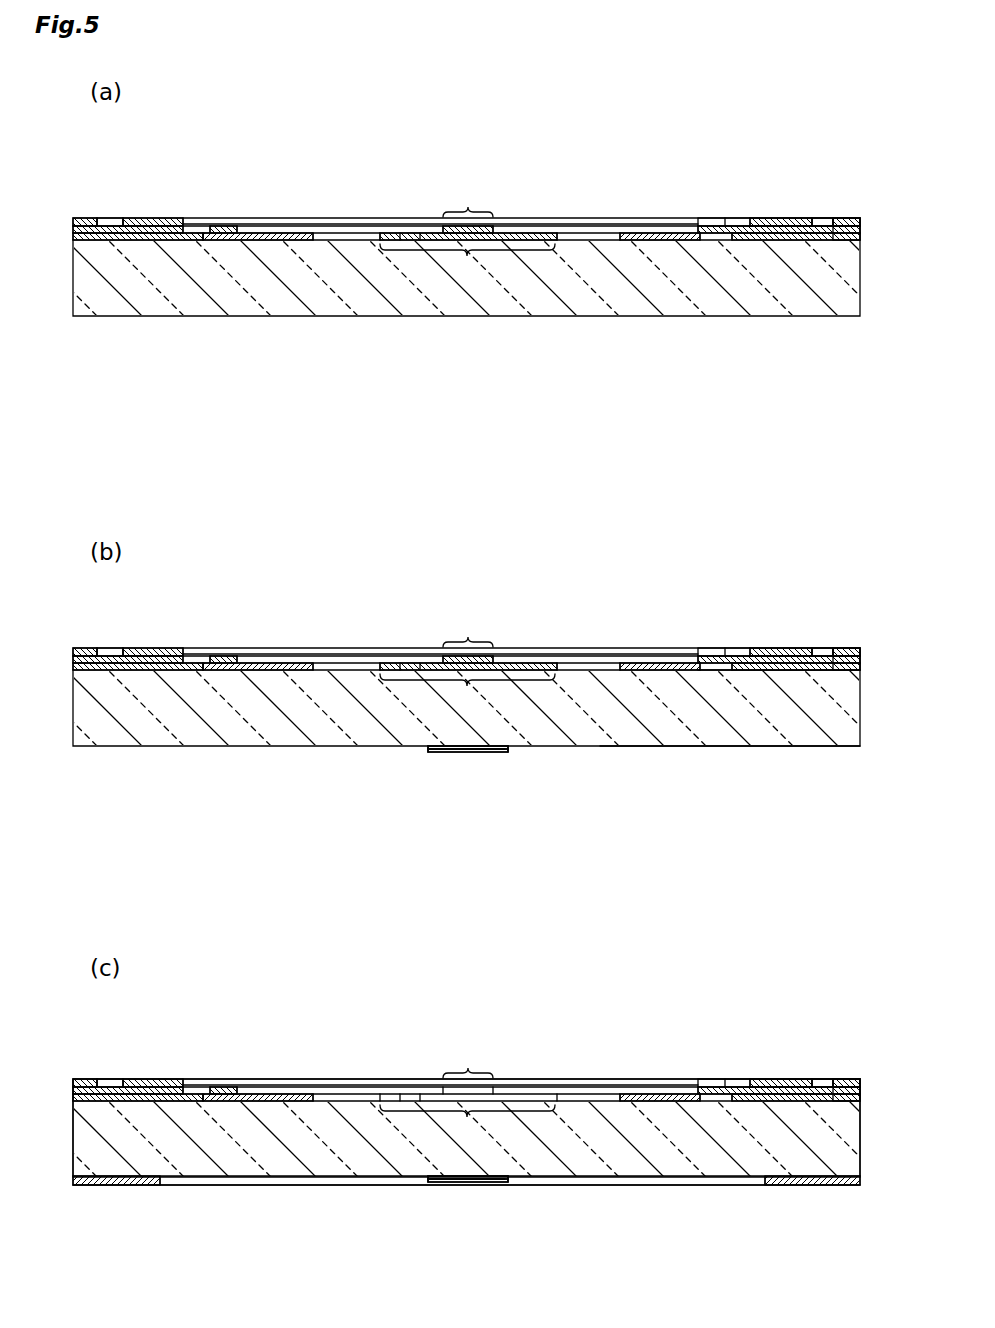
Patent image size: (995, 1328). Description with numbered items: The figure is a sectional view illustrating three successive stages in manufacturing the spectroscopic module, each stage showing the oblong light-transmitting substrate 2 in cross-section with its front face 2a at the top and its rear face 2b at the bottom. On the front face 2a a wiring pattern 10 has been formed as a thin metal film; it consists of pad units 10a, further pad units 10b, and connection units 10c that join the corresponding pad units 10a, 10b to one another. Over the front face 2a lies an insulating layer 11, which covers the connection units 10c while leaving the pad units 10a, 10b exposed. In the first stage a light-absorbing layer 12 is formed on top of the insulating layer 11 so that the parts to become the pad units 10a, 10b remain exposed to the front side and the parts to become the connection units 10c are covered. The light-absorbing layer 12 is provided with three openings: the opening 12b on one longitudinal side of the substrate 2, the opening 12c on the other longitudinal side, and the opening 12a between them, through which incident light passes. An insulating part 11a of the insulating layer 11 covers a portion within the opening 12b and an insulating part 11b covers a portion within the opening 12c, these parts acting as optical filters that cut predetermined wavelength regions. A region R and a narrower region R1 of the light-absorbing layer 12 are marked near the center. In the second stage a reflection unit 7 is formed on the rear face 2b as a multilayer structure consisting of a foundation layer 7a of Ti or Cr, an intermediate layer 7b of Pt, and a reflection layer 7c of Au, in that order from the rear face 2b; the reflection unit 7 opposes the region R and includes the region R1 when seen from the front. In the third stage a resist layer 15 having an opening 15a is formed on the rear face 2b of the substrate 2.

The substrate 2 is at (720, 296).
The front face of the substrate 2a is at (792, 648).
The rear face of the substrate 2b is at (788, 746).
The reflection unit 7 is at (486, 1005).
The foundation layer 7a is at (506, 752).
The intermediate layer 7b is at (478, 753).
The reflection layer 7c is at (442, 753).
The wiring pattern 10 is at (800, 218).
The pad units 10a is at (195, 218).
The pad units 10b is at (105, 218).
The connection units 10c is at (142, 218).
The insulating layer 11 is at (857, 218).
The insulating part 11a is at (278, 1079).
The insulating part 11b is at (655, 1098).
The light-absorbing layer 12 is at (847, 218).
The opening 12a is at (408, 218).
The opening 12b is at (252, 218).
The opening 12c is at (683, 218).
The resist layer 15 is at (812, 1186).
The opening 15a is at (765, 1186).
The region R is at (467, 699).
The region R1 is at (468, 627).